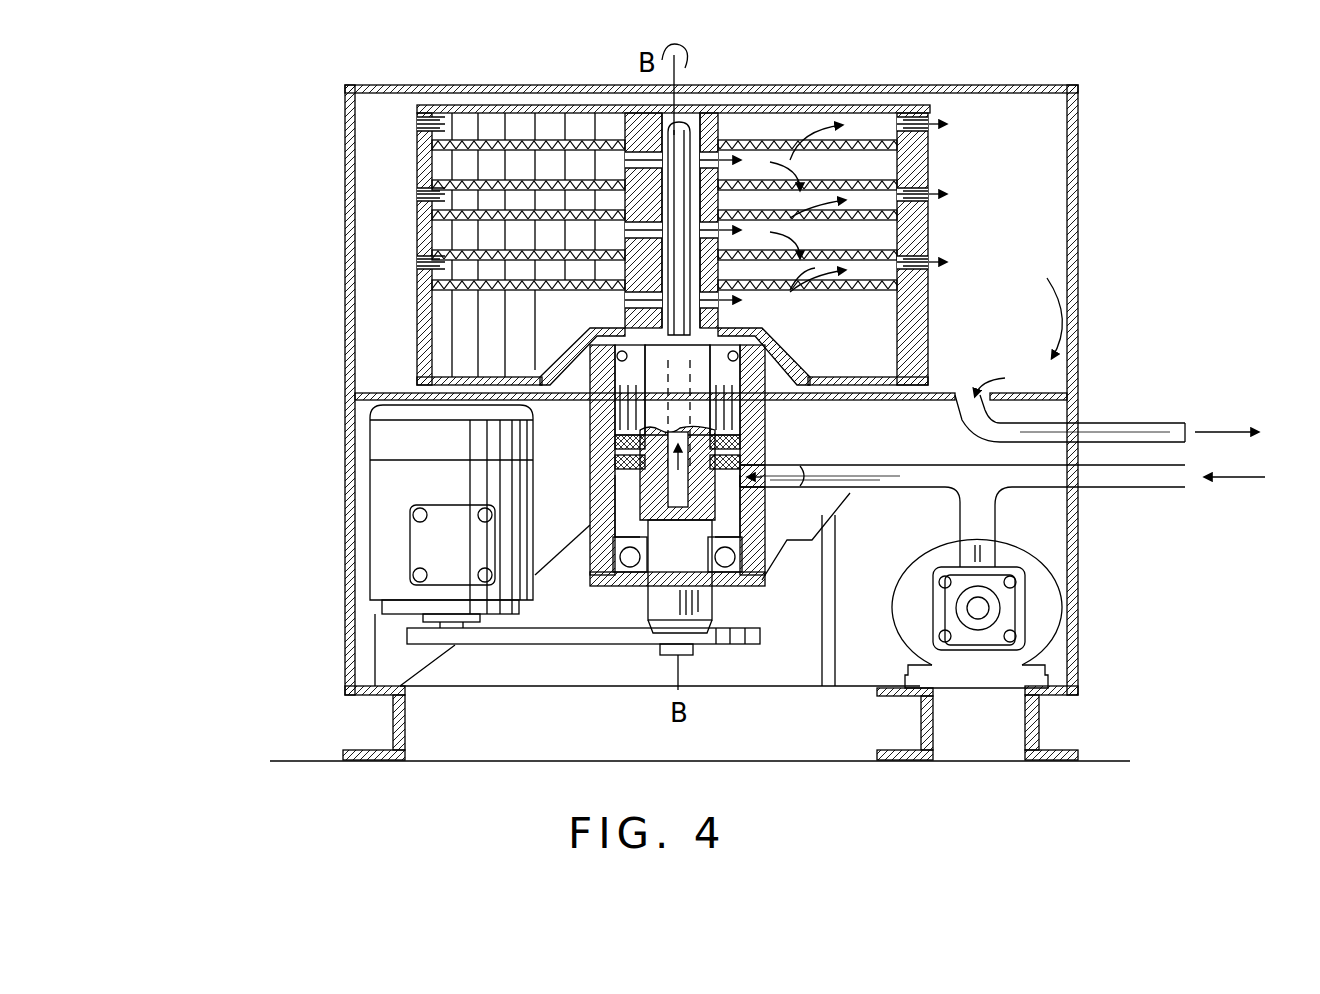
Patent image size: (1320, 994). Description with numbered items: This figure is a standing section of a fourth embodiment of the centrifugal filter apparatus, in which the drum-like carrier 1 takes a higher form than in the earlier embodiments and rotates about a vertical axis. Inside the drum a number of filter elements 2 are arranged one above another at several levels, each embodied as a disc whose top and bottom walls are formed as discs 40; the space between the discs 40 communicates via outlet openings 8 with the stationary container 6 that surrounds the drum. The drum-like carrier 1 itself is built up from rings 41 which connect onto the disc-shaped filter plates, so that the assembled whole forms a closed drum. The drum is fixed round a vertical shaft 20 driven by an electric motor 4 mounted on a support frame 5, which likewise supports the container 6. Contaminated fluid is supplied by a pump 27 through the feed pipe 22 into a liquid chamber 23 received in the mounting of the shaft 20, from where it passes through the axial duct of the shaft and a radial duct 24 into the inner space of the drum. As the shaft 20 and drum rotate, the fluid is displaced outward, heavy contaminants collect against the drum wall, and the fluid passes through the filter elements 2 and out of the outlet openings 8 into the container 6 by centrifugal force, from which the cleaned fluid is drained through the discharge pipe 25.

The drum-like carrier 1 is at (468, 107).
The filter elements 2 is at (417, 165).
The electric motor 4 is at (395, 495).
The support frame 5 is at (1058, 692).
The container 6 is at (343, 397).
The outlet openings 8 is at (417, 122).
The vertical shaft 20 is at (700, 407).
The feed pipe 22 is at (932, 468).
The liquid chamber 23 is at (592, 487).
The radial duct 24 is at (628, 160).
The discharge pipe 25 is at (1128, 432).
The pump 27 is at (1045, 604).
The discs 40 is at (805, 135).
The rings 41 is at (930, 152).